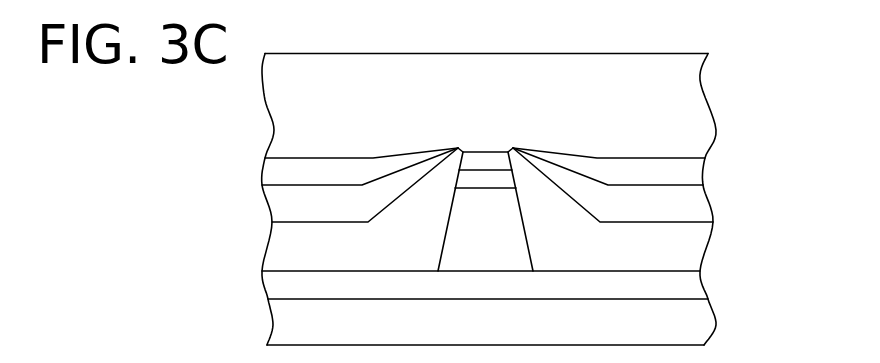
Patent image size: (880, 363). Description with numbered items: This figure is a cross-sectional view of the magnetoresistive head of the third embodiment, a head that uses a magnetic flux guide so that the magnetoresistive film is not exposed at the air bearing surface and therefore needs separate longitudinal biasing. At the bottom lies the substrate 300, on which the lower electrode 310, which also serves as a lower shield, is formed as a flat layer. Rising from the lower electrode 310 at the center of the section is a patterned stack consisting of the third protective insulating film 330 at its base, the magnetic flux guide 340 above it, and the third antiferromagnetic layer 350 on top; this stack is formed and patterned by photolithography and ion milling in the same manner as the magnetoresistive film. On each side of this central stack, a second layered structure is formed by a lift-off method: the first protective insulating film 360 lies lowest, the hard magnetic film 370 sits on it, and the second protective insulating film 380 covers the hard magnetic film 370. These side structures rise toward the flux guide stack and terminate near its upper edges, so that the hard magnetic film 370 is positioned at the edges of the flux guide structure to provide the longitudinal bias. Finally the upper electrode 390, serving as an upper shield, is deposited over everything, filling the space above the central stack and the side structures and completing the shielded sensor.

The substrate 300 is at (485, 328).
The lower electrode 310 is at (488, 287).
The third protective insulating film 330 is at (485, 211).
The magnetic flux guide 340 is at (485, 180).
The third antiferromagnetic layer 350 is at (485, 160).
The first protective insulating film 360 is at (481, 253).
The hard magnetic film 370 is at (492, 185).
The second protective insulating film 380 is at (482, 166).
The upper electrode 390 is at (486, 106).